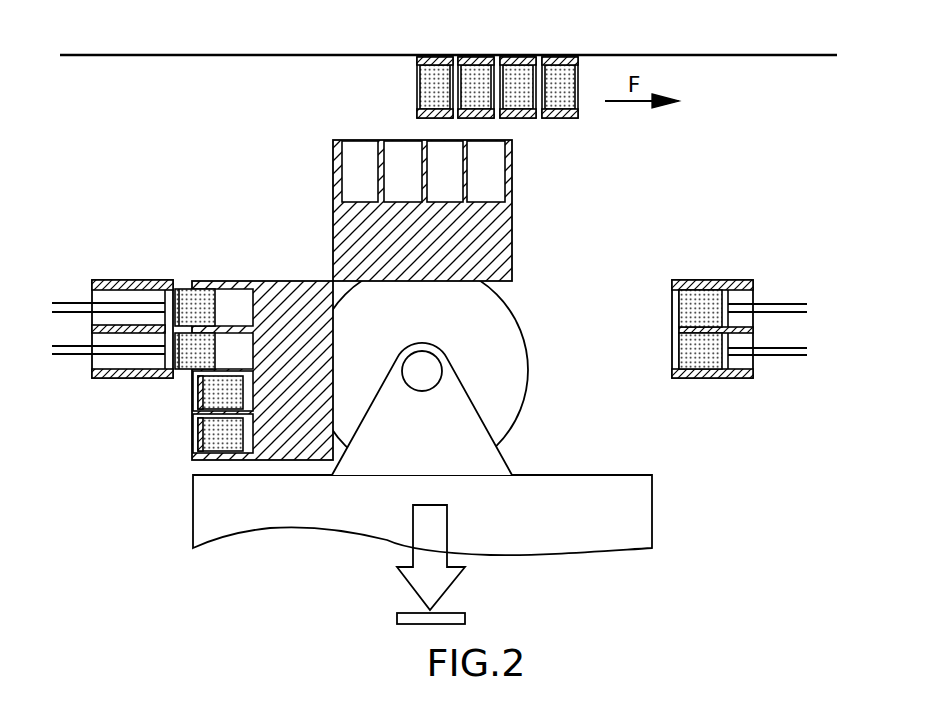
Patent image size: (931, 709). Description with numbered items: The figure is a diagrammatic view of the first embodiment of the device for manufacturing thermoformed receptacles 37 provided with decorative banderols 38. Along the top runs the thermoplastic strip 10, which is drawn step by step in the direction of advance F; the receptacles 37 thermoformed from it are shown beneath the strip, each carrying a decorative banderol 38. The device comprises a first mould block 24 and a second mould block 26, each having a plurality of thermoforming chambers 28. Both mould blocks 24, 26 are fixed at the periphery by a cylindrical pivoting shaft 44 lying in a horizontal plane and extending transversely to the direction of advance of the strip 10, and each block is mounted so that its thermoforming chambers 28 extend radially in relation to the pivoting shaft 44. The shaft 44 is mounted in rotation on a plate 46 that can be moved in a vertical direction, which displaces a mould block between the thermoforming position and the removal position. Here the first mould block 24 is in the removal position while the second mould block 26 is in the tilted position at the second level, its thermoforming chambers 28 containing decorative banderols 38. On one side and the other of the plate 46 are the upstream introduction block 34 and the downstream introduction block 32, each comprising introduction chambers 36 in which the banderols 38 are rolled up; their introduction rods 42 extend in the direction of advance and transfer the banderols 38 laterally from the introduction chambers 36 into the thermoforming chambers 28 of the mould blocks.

The strip 10 is at (80, 54).
The first mould block 24 is at (512, 242).
The second mould block 26 is at (268, 284).
The thermoforming chambers 28 is at (360, 174).
The downstream introduction block 32 is at (737, 262).
The upstream introduction block 34 is at (127, 262).
The introduction chambers 36 is at (137, 371).
The receptacles 37 is at (562, 113).
The decorative banderols 38 is at (560, 78).
The introduction rods 42 is at (77, 311).
The cylindrical pivoting shaft 44 is at (527, 356).
The plate 46 is at (652, 503).